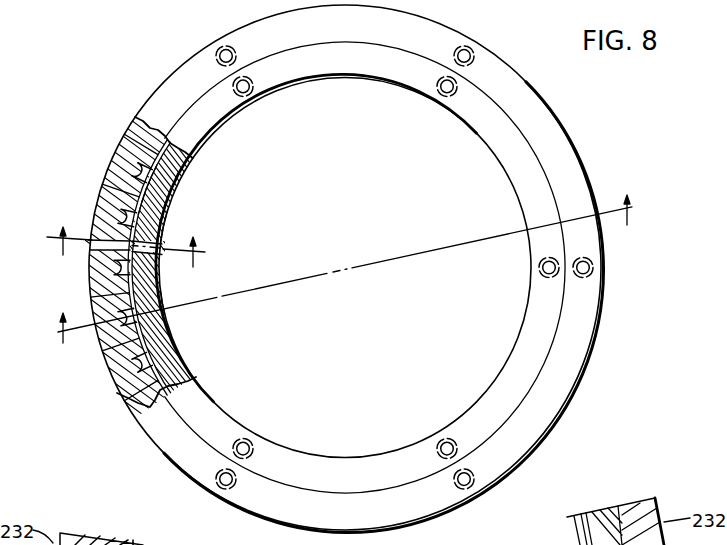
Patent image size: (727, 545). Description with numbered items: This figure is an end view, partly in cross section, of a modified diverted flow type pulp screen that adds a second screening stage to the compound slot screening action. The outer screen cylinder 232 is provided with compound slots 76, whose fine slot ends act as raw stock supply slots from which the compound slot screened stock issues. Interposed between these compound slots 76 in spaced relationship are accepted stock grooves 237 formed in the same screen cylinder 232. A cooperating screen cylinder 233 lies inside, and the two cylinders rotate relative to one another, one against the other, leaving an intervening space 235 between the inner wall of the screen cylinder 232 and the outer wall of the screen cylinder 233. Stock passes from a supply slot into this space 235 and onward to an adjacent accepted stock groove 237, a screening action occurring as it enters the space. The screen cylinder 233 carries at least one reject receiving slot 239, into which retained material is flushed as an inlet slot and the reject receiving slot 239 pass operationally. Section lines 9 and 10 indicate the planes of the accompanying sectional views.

The section line 9- 9 is at (125, 246).
The section line 10- 10 is at (346, 269).
The compound slots 76 is at (97, 190).
The screen cylinder 232 is at (135, 375).
The screen cylinder 233 is at (188, 190).
The intervening space 235 is at (160, 287).
The accepted stock grooves 237 is at (130, 170).
The reject receiving slot 239 is at (165, 232).